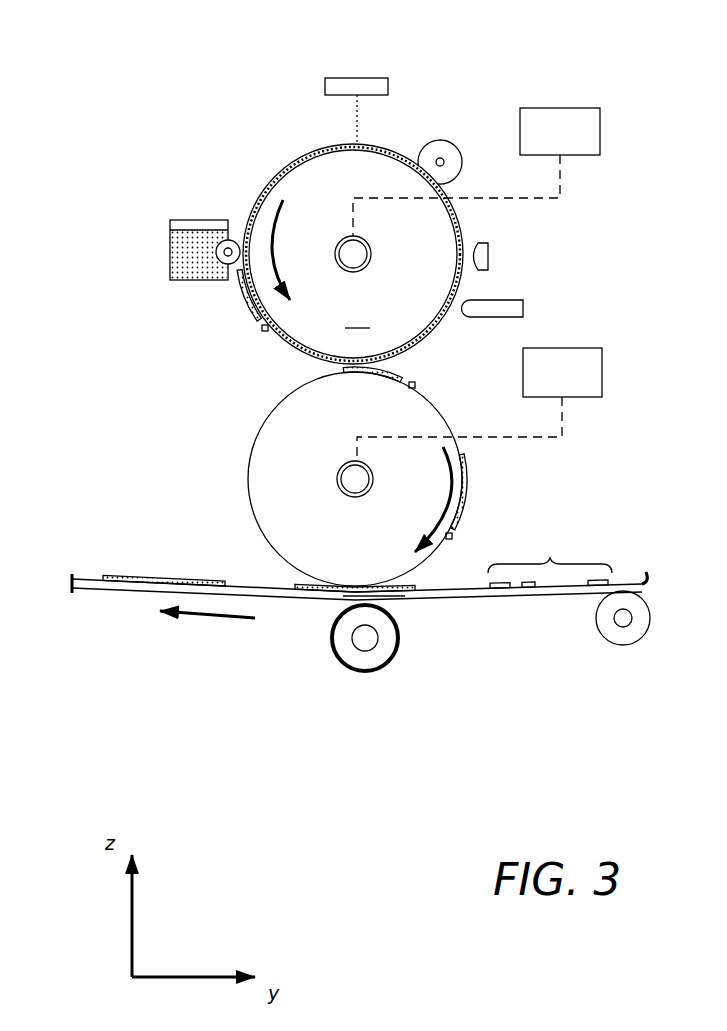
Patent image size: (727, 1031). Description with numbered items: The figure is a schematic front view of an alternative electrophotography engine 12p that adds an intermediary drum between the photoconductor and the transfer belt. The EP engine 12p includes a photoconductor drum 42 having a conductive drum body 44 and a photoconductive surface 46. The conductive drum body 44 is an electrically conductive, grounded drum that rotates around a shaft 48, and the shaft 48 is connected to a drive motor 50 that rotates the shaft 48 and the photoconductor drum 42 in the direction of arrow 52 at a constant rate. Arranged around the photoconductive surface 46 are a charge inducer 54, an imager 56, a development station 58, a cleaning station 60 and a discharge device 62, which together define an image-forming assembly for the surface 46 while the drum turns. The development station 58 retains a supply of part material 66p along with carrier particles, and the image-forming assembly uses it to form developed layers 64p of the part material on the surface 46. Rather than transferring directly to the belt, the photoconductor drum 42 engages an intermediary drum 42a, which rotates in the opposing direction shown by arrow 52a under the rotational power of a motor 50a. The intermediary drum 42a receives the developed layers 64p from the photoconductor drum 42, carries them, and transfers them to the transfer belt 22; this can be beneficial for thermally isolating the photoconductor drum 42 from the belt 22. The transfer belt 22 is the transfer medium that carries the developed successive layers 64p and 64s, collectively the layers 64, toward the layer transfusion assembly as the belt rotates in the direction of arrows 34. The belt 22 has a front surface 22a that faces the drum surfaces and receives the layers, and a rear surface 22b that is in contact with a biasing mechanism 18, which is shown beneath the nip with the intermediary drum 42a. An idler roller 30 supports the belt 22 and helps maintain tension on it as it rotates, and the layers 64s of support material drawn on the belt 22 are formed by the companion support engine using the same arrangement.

The EP engine 12p is at (125, 68).
The imager 56 is at (373, 78).
The drive motor 50 is at (583, 108).
The photoconductive surface 46 is at (305, 150).
The charge inducer 54 is at (436, 140).
The photoconductor drum 42 is at (319, 237).
The development station 58 is at (162, 214).
The part material 66p is at (183, 257).
The arrow 52 is at (272, 230).
The shaft 48 is at (365, 258).
The discharge device 62 is at (490, 243).
The cleaning station 60 is at (505, 300).
The conductive drum body 44 is at (357, 318).
The motor 50a is at (588, 348).
The intermediary drum 42a is at (310, 479).
The arrow 52a is at (441, 466).
The layers of part material 64p is at (238, 304).
The front surface 22a is at (634, 582).
The rear surface 22b is at (520, 600).
The transfer belt 22 is at (367, 608).
The layers 64 is at (155, 560).
The layers of support material 64s is at (300, 650).
The arrows 34 is at (200, 622).
The biasing mechanism 18 is at (380, 646).
The idler roller 30 is at (627, 640).